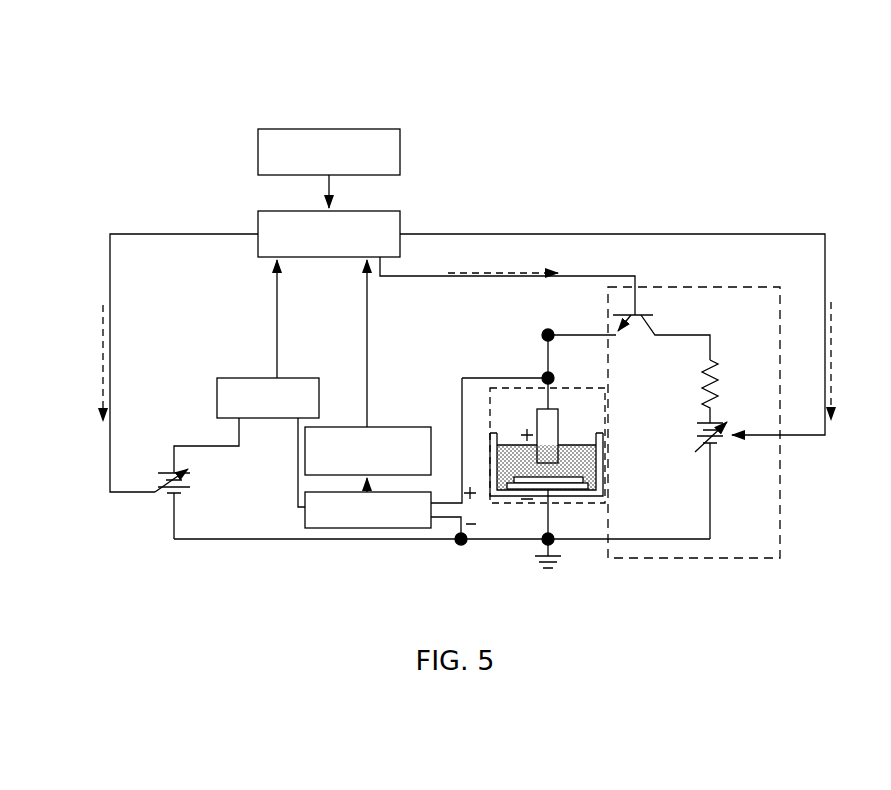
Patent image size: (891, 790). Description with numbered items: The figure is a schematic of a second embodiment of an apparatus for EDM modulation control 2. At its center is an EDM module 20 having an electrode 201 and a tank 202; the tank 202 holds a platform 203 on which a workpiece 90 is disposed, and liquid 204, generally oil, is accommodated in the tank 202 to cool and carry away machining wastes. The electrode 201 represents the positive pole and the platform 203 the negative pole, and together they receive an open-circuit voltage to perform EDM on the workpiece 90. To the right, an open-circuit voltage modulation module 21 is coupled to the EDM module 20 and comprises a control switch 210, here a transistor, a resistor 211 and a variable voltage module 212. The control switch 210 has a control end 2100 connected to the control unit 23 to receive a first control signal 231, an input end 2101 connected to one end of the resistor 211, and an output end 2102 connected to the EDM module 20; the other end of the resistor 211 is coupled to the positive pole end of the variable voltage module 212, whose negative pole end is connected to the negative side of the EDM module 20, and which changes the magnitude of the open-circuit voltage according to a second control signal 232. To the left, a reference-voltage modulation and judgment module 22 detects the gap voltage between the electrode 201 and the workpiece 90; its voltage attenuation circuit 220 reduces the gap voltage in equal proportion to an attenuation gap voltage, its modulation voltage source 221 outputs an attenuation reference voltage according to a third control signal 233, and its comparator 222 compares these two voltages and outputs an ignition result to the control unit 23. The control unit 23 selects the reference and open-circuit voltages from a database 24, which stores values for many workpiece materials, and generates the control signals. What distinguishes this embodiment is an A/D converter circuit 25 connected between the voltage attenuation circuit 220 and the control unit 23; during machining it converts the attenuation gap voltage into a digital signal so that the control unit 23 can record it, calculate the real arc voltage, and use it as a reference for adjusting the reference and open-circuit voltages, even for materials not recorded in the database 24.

The apparatus for EDM modulation control 2 is at (70, 124).
The EDM module 20 is at (560, 382).
The electrode 201 is at (552, 419).
The tank 202 is at (604, 484).
The platform 203 is at (566, 508).
The liquid 204 is at (578, 455).
The workpiece 90 is at (507, 470).
The open-circuit voltage modulation module 21 is at (738, 280).
The control switch 210 is at (662, 306).
The control end 2100 is at (636, 305).
The input end 2101 is at (656, 333).
The output end 2102 is at (612, 328).
The resistor 211 is at (700, 380).
The variable voltage module 212 is at (720, 444).
The reference-voltage modulation and judgment module 22 is at (186, 420).
The modulation voltage source 221 is at (184, 496).
The comparator 222 is at (294, 378).
The voltage attenuation circuit 220 is at (348, 529).
The control unit 23 is at (400, 225).
The first control signal 231 is at (530, 270).
The second control signal 232 is at (836, 380).
The third control signal 233 is at (101, 366).
The database 24 is at (400, 152).
The A/D converter circuit 25 is at (388, 427).